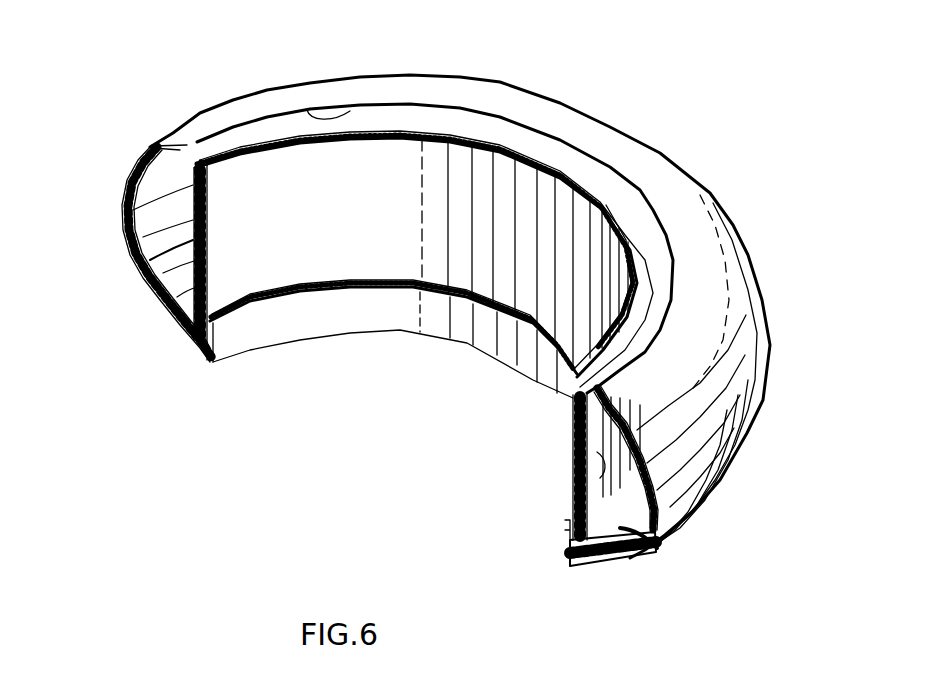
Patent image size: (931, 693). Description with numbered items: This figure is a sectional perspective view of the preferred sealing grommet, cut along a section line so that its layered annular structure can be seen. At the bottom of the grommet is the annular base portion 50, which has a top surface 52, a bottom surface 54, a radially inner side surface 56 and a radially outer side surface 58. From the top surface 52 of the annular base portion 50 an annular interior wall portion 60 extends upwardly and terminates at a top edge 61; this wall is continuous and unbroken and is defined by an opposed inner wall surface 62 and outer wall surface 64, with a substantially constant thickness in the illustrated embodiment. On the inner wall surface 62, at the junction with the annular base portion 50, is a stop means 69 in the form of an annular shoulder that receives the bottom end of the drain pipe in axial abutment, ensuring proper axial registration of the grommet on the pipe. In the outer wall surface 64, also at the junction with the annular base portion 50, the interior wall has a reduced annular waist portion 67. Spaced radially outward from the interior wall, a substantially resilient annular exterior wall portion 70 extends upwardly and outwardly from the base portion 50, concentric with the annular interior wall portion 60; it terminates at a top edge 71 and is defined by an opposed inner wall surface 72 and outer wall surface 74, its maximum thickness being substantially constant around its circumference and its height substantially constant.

The annular base portion 50 is at (203, 348).
The top surface 52 is at (210, 318).
The bottom surface 54 is at (212, 362).
The radially inner side surface 56 is at (390, 318).
The radially outer side surface 58 is at (588, 560).
The annular interior wall portion 60 is at (403, 155).
The top edge 61 is at (603, 210).
The inner wall surface 62 is at (410, 201).
The outer wall surface 64 is at (190, 220).
The reduced annular waist portion 67 is at (180, 325).
The stop means 69 is at (249, 303).
The annular exterior wall portion 70 is at (122, 200).
The top edge 71 is at (353, 110).
The inner wall surface 72 is at (570, 57).
The outer wall surface 74 is at (742, 237).